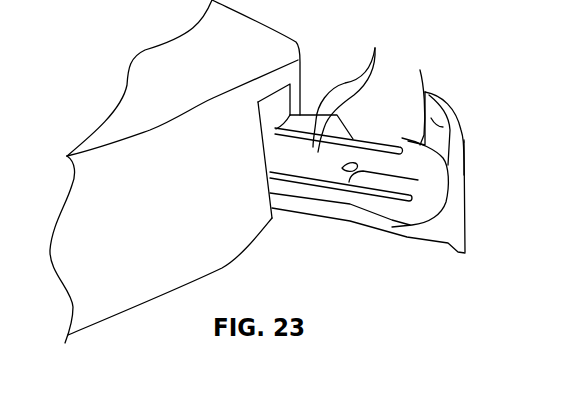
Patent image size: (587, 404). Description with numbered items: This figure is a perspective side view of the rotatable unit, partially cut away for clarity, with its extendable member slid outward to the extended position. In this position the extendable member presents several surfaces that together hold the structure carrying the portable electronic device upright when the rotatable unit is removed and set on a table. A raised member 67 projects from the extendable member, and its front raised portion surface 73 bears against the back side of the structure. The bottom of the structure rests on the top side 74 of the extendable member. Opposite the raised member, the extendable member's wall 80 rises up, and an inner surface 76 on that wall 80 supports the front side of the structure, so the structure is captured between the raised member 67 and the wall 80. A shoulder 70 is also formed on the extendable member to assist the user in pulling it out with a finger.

The raised member 67 is at (352, 86).
The shoulder 70 is at (465, 253).
The front raised portion surface 73 is at (342, 168).
The top side 74 is at (348, 172).
The inner surface 76 is at (432, 107).
The wall 80 is at (464, 140).